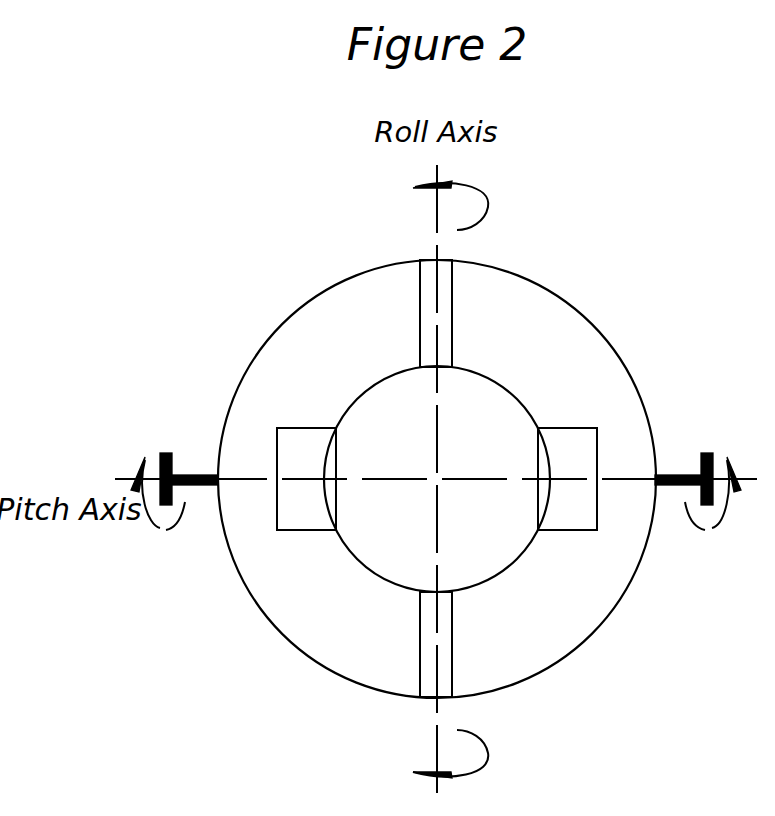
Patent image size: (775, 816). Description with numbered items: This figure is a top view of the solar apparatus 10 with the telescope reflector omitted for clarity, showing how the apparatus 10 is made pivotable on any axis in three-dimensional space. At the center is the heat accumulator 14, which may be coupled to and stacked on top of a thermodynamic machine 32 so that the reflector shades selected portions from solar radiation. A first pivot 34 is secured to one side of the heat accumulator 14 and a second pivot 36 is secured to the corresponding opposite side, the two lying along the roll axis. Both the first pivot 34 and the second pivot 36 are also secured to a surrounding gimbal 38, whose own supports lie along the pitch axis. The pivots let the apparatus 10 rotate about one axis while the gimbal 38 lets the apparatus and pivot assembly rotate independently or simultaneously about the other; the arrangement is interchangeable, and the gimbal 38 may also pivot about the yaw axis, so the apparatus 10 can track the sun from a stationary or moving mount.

The apparatus 10 is at (235, 263).
The heat accumulator 14 is at (480, 417).
The thermodynamic machine 32 is at (297, 445).
The first pivot 34 is at (418, 647).
The second pivot 36 is at (402, 305).
The gimbal 38 is at (608, 338).